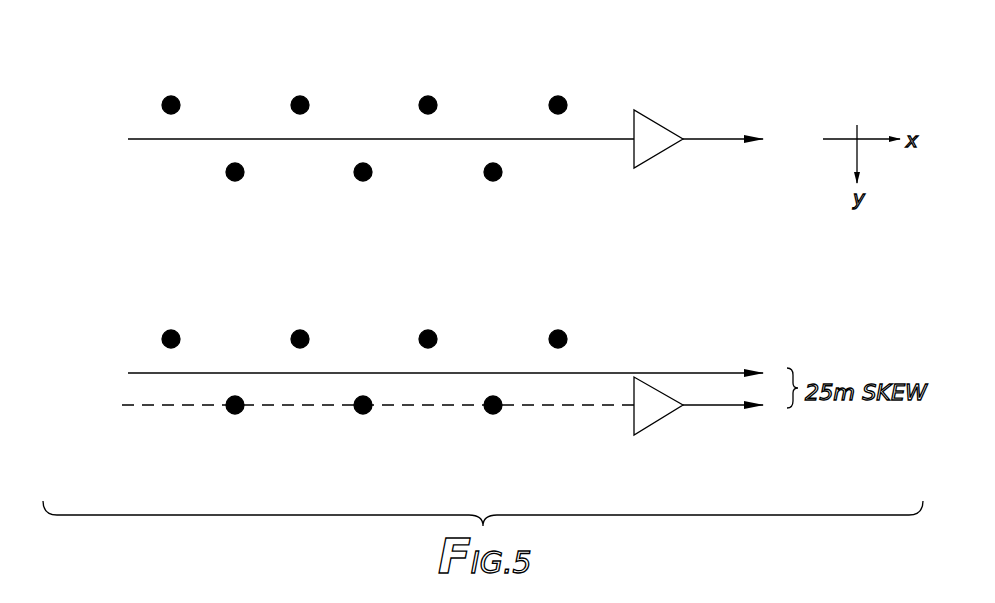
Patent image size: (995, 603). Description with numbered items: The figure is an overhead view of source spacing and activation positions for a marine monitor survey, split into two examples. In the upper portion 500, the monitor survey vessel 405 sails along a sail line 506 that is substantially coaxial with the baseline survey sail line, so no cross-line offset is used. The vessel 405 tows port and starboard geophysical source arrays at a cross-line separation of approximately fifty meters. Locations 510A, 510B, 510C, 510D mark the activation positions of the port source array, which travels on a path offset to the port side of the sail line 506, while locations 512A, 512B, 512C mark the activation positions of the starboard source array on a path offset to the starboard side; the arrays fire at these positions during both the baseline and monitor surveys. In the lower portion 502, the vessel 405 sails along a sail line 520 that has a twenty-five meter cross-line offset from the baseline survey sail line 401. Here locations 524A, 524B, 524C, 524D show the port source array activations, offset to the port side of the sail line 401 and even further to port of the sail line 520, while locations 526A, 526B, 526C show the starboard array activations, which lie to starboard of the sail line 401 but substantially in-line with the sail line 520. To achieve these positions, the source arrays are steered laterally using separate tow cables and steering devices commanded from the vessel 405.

The upper portion 500 is at (122, 85).
The lower portion 502 is at (122, 320).
The port source array activation position 510A is at (178, 98).
The port source array activation position 510B is at (307, 98).
The port source array activation position 510C is at (435, 98).
The port source array activation position 510D is at (565, 98).
The starboard source array activation position 512A is at (228, 179).
The starboard source array activation position 512B is at (356, 179).
The starboard source array activation position 512C is at (486, 179).
The tow vessel 405 is at (656, 112).
The sail line 506 is at (774, 80).
The baseline survey sail line 401 is at (712, 372).
The port source array activation position 524A is at (178, 332).
The port source array activation position 524B is at (307, 332).
The port source array activation position 524C is at (435, 332).
The port source array activation position 524D is at (565, 332).
The starboard source array activation position 526A is at (228, 411).
The starboard source array activation position 526B is at (356, 411).
The starboard source array activation position 526C is at (486, 411).
The sail line 520 is at (715, 407).